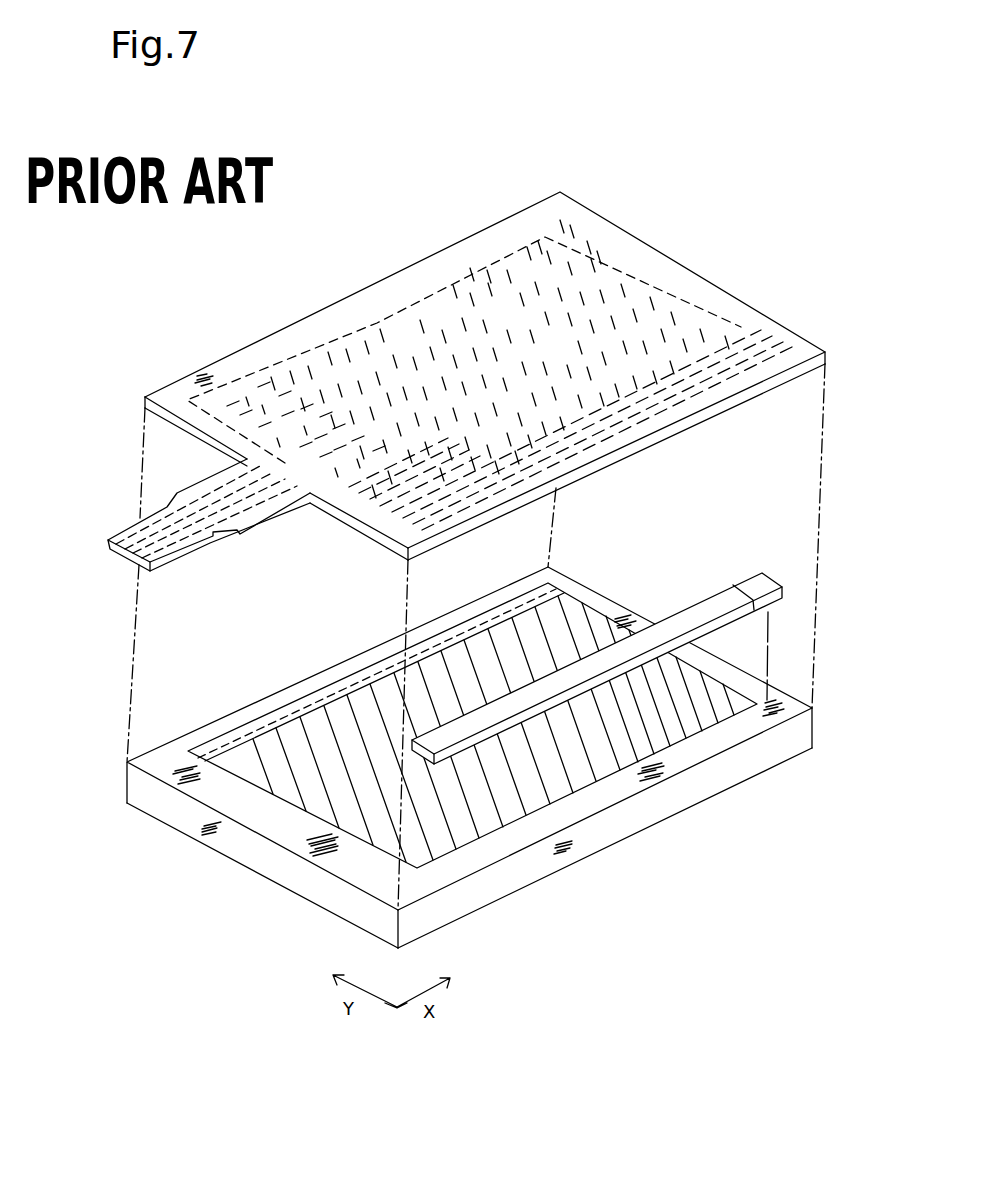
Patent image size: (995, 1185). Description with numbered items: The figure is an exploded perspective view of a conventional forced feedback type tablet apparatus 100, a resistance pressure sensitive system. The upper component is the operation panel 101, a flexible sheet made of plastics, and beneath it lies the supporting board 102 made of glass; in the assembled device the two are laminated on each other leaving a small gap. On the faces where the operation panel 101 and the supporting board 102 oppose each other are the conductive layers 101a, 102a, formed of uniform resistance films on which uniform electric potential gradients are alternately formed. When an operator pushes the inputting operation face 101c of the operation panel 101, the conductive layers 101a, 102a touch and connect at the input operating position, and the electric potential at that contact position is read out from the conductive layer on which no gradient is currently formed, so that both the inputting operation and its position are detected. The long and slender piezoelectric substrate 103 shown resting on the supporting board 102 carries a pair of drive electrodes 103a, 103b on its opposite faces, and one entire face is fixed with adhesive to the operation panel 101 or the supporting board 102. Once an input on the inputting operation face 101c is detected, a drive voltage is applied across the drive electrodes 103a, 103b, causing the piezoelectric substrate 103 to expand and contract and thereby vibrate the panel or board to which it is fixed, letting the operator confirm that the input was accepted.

The tablet apparatus 100 is at (614, 165).
The operation panel 101 is at (448, 265).
The conductive layer 101a is at (540, 247).
The inputting operation face 101c is at (403, 345).
The supporting board 102 is at (487, 757).
The conductive layer 102a is at (573, 767).
The piezoelectric substrate 103 is at (653, 639).
The drive electrode 103a is at (766, 610).
The drive electrode 103b is at (699, 612).